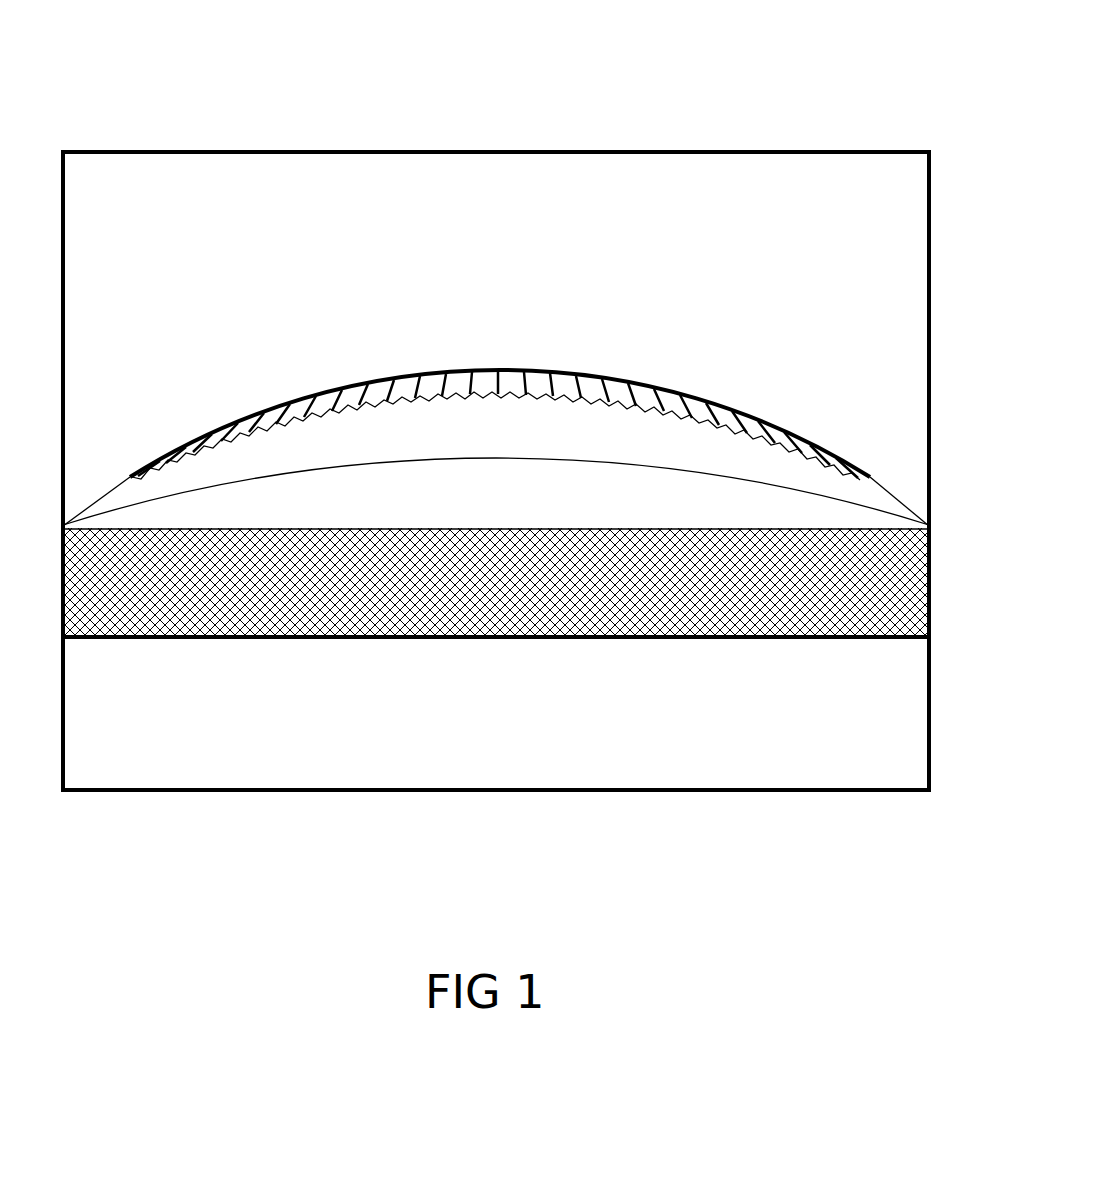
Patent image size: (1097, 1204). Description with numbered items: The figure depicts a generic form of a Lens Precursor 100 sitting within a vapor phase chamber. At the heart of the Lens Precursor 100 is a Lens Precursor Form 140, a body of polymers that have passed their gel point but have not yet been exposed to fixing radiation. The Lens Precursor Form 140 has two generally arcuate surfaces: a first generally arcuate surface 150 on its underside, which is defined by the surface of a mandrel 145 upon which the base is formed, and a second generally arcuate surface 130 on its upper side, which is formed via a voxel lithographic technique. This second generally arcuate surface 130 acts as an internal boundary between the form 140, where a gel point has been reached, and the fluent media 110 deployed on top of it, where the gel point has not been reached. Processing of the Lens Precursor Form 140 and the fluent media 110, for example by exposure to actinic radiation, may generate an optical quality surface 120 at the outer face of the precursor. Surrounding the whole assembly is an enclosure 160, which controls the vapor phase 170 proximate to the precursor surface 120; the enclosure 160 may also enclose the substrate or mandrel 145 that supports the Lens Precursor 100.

The Lens Precursor 100 is at (333, 350).
The fluent media 110 is at (270, 415).
The optical quality surface 120 is at (420, 372).
The second generally arcuate surface 130 is at (627, 413).
The Lens Precursor Form 140 is at (688, 447).
The mandrel 145 is at (433, 585).
The first generally arcuate surface 150 is at (553, 465).
The enclosure 160 is at (825, 152).
The vapor phase 170 is at (611, 288).